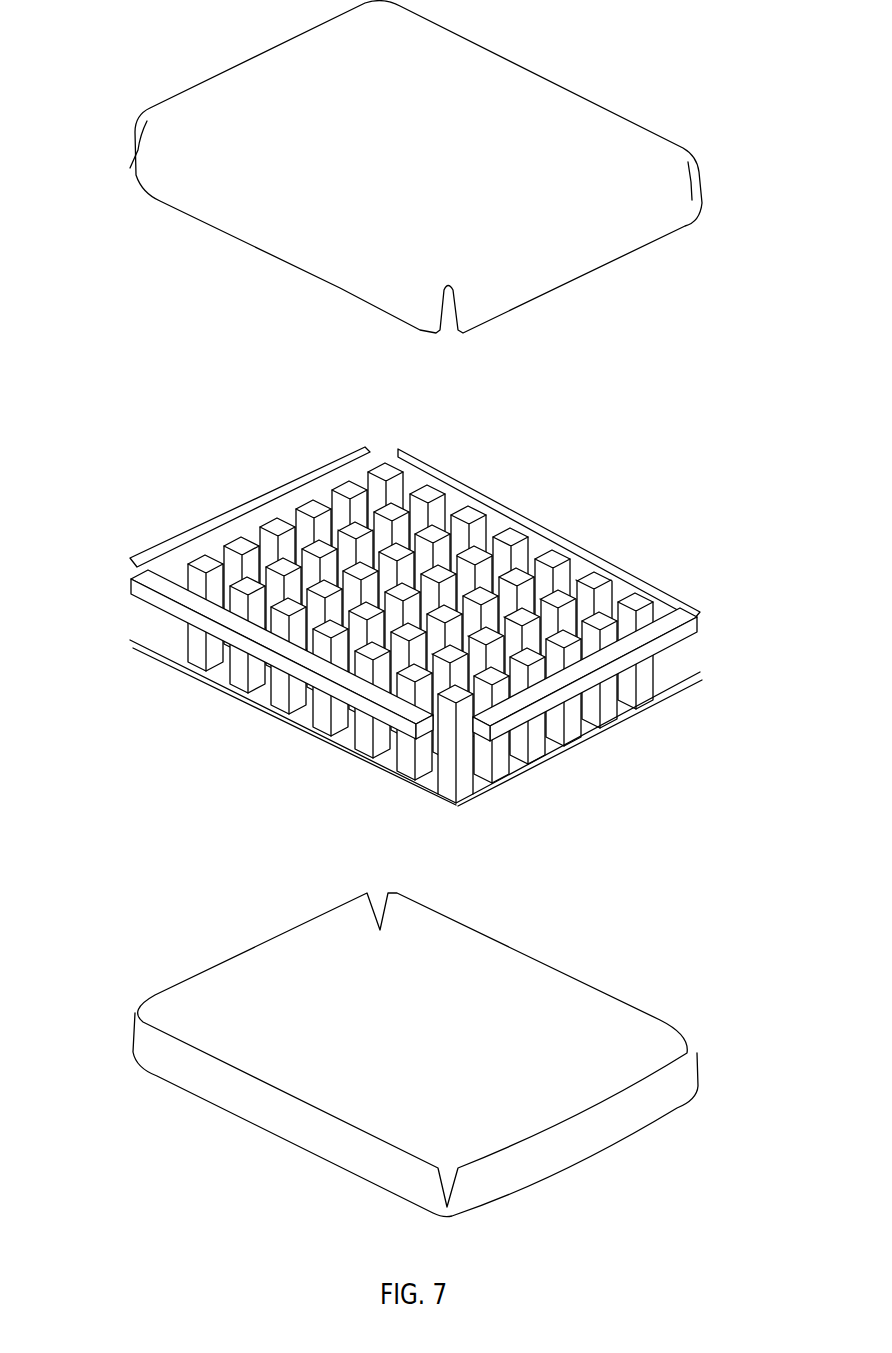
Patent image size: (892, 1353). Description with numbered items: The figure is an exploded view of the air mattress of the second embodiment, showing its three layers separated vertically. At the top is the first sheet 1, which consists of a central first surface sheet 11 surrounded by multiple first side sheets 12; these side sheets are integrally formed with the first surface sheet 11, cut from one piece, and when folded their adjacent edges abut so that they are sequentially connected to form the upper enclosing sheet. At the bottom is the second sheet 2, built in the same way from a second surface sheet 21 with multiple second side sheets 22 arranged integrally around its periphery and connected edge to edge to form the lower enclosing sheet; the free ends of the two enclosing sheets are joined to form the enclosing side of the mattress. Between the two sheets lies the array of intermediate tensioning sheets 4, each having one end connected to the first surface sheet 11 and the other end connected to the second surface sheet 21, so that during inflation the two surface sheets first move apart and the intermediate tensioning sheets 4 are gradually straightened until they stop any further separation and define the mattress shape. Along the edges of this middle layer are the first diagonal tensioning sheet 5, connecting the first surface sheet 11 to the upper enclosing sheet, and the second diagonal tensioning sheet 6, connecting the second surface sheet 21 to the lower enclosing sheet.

The first sheet 1 is at (435, 180).
The first surface sheet 11 is at (535, 205).
The first side sheets 12 is at (240, 212).
The second sheet 2 is at (436, 1060).
The second surface sheet 21 is at (497, 1085).
The second side sheets 22 is at (243, 1098).
The intermediate tensioning sheets 4 is at (522, 577).
The first diagonal tensioning sheet 5 is at (655, 583).
The second diagonal tensioning sheet 6 is at (253, 705).